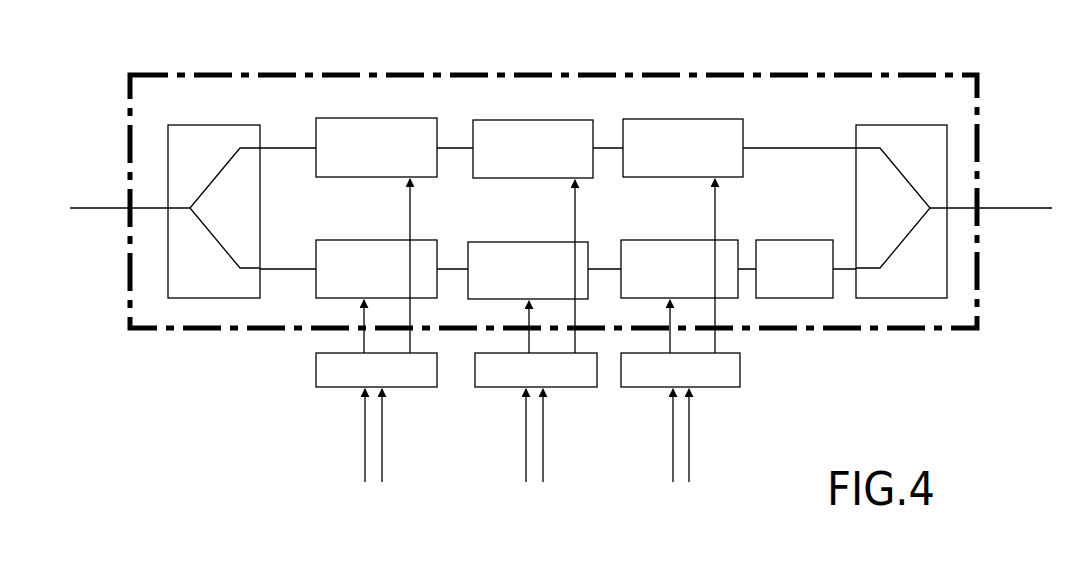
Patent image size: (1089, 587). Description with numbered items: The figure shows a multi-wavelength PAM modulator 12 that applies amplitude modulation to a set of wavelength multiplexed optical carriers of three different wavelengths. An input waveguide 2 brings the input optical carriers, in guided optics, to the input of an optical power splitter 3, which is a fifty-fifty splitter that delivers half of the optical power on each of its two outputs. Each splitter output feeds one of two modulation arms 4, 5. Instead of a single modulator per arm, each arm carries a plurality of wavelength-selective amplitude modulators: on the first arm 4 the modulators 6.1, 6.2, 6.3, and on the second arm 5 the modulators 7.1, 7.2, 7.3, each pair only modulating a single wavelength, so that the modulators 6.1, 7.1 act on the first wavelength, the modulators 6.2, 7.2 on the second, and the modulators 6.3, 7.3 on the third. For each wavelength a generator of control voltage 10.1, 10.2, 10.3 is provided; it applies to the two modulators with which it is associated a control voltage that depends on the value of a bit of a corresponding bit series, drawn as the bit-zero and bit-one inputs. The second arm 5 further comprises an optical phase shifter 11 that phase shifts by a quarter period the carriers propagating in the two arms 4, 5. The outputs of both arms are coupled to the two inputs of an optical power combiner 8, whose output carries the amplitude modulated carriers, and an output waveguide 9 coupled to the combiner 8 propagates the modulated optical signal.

The input waveguide 2 is at (152, 210).
The optical power splitter 3 is at (186, 300).
The modulation arm 4 is at (830, 148).
The modulation arm 5 is at (845, 270).
The amplitude modulator 6.1 is at (412, 127).
The amplitude modulator 6.2 is at (570, 128).
The amplitude modulator 6.3 is at (713, 128).
The amplitude modulator 7.1 is at (323, 298).
The amplitude modulator 7.2 is at (482, 300).
The amplitude modulator 7.3 is at (628, 298).
The optical power combiner 8 is at (920, 290).
The output waveguide 9 is at (1010, 210).
The generator of control voltage 10.1 is at (335, 378).
The generator of control voltage 10.2 is at (498, 378).
The generator of control voltage 10.3 is at (652, 378).
The optical phase shifter 11 is at (807, 298).
The multi-wavelength PAM modulator 12 is at (980, 128).